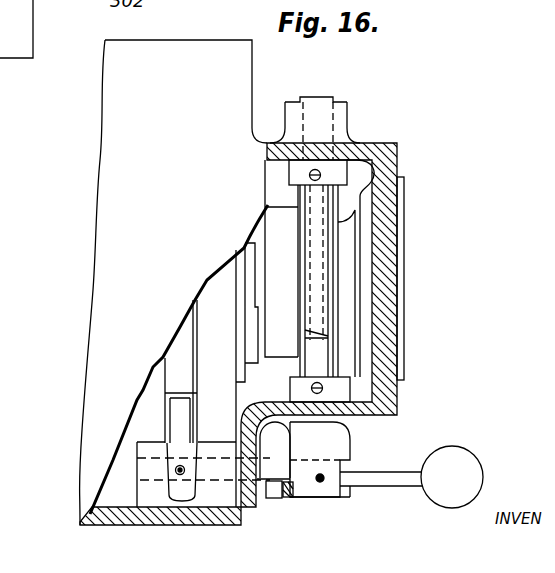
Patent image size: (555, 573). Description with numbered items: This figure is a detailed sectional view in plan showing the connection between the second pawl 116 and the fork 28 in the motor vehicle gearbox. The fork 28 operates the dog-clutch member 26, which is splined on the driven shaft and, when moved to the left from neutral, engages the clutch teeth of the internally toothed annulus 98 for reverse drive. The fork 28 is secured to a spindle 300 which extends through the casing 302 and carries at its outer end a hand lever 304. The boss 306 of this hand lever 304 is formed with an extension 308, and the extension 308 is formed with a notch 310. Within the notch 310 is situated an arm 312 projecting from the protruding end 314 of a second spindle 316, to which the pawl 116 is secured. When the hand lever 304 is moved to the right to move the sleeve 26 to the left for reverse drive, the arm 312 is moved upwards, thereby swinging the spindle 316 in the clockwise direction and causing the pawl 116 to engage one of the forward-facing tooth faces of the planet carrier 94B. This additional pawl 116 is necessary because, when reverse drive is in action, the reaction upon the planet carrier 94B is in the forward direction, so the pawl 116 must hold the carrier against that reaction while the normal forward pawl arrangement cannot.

The dog-clutch member 26 is at (279, 236).
The fork 28 is at (340, 383).
The planet carrier 94B is at (180, 345).
The internally toothed annulus 98 is at (217, 293).
The second pawl 116 is at (180, 416).
The spindle 300 is at (290, 440).
The casing 302 is at (462, 451).
The hand lever 304 is at (392, 486).
The boss 306 is at (303, 494).
The extension 308 is at (289, 497).
The notch 310 is at (263, 497).
The arm 312 is at (270, 500).
The protruding end 314 is at (270, 463).
The spindle 316 is at (137, 459).